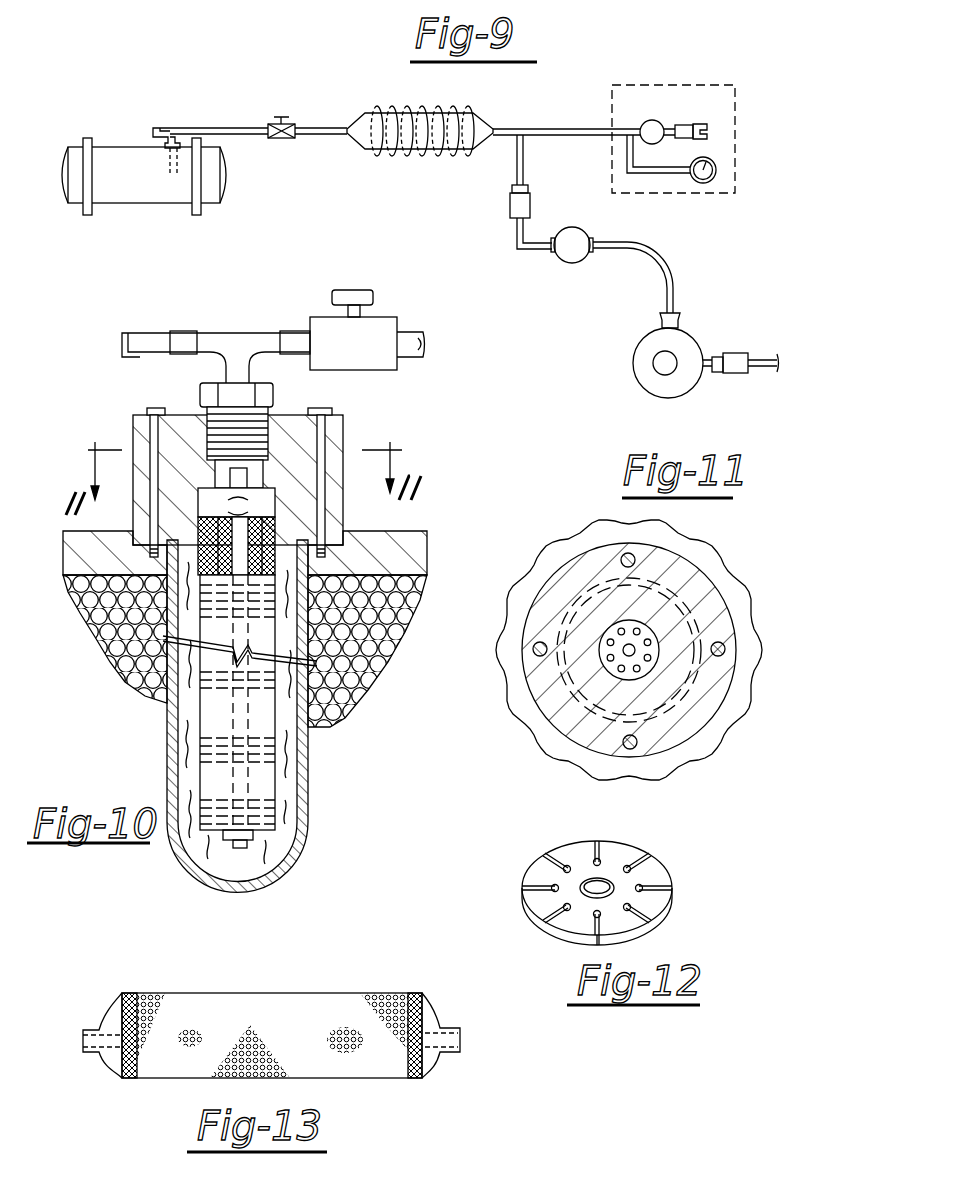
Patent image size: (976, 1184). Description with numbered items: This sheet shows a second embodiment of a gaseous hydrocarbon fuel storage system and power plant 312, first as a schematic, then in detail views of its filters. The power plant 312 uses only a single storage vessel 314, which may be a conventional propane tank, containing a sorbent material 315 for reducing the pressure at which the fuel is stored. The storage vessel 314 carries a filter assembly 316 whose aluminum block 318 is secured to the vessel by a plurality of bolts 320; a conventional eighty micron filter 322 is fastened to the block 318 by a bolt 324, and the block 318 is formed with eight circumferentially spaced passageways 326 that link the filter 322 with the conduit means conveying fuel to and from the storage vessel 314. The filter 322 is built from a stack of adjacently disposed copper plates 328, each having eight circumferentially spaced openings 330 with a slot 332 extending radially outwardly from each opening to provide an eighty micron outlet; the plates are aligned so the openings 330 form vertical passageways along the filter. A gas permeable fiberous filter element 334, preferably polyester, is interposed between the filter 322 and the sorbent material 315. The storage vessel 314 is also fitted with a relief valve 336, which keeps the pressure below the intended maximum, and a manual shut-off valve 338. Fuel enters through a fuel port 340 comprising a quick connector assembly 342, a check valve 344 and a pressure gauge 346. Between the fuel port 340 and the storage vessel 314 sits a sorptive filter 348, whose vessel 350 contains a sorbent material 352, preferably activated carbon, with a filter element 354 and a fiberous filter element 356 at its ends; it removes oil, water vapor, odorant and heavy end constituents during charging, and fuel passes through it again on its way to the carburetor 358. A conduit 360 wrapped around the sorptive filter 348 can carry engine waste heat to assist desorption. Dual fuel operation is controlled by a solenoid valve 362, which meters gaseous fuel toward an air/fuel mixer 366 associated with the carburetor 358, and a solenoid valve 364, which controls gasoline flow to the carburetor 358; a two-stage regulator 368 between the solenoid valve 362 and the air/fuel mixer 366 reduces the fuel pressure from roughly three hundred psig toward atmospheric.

In FIG. 9, the gaseous hydrocarbon fuel storage system and power plant 312 is at (270, 95).
In FIG. 9, the storage vessel 314 is at (122, 196).
In FIG. 10, the storage vessel 314 is at (418, 530).
In FIG. 11, the storage vessel 314 is at (703, 552).
In FIG. 10, the sorbent material 315 is at (85, 600).
In FIG. 9, the filter assembly 316 is at (152, 150).
In FIG. 10, the filter assembly 316 is at (140, 700).
In FIG. 10, the aluminum block 318 is at (342, 432).
In FIG. 11, the aluminum block 318 is at (547, 612).
In FIG. 10, the bolts 320 is at (150, 413).
In FIG. 11, the bolts 320 is at (624, 555).
In FIG. 10, the filter 322 is at (268, 729).
In FIG. 10, the bolt 324 is at (240, 848).
In FIG. 11, the passageways 326 is at (617, 717).
In FIG. 12, the copper plates 328 is at (670, 872).
In FIG. 12, the openings 330 is at (572, 865).
In FIG. 12, the slot 332 is at (565, 845).
In FIG. 10, the fiberous filter element 334 is at (310, 787).
In FIG. 9, the relief valve 336 is at (190, 88).
In FIG. 10, the relief valve 336 is at (152, 332).
In FIG. 9, the manual shut-off valve 338 is at (285, 140).
In FIG. 10, the manual shut-off valve 338 is at (388, 316).
In FIG. 9, the fuel port 340 is at (692, 49).
In FIG. 9, the quick connector assembly 342 is at (709, 126).
In FIG. 9, the check valve 344 is at (643, 122).
In FIG. 9, the pressure gauge 346 is at (716, 186).
In FIG. 9, the sorptive filter 348 is at (364, 108).
In FIG. 13, the sorptive filter 348 is at (198, 983).
In FIG. 13, the vessel 350 is at (110, 1067).
In FIG. 13, the sorbent material 352 is at (253, 1040).
In FIG. 13, the filter element 354 is at (442, 1037).
In FIG. 13, the fiberous filter element 356 is at (410, 1080).
In FIG. 9, the carburetor 358 is at (662, 364).
In FIG. 9, the conduit 360 is at (412, 150).
In FIG. 9, the solenoid valve 362 is at (512, 196).
In FIG. 9, the solenoid valve 364 is at (738, 353).
In FIG. 9, the air/fuel mixer 366 is at (633, 352).
In FIG. 9, the two-stage regulator 368 is at (575, 265).